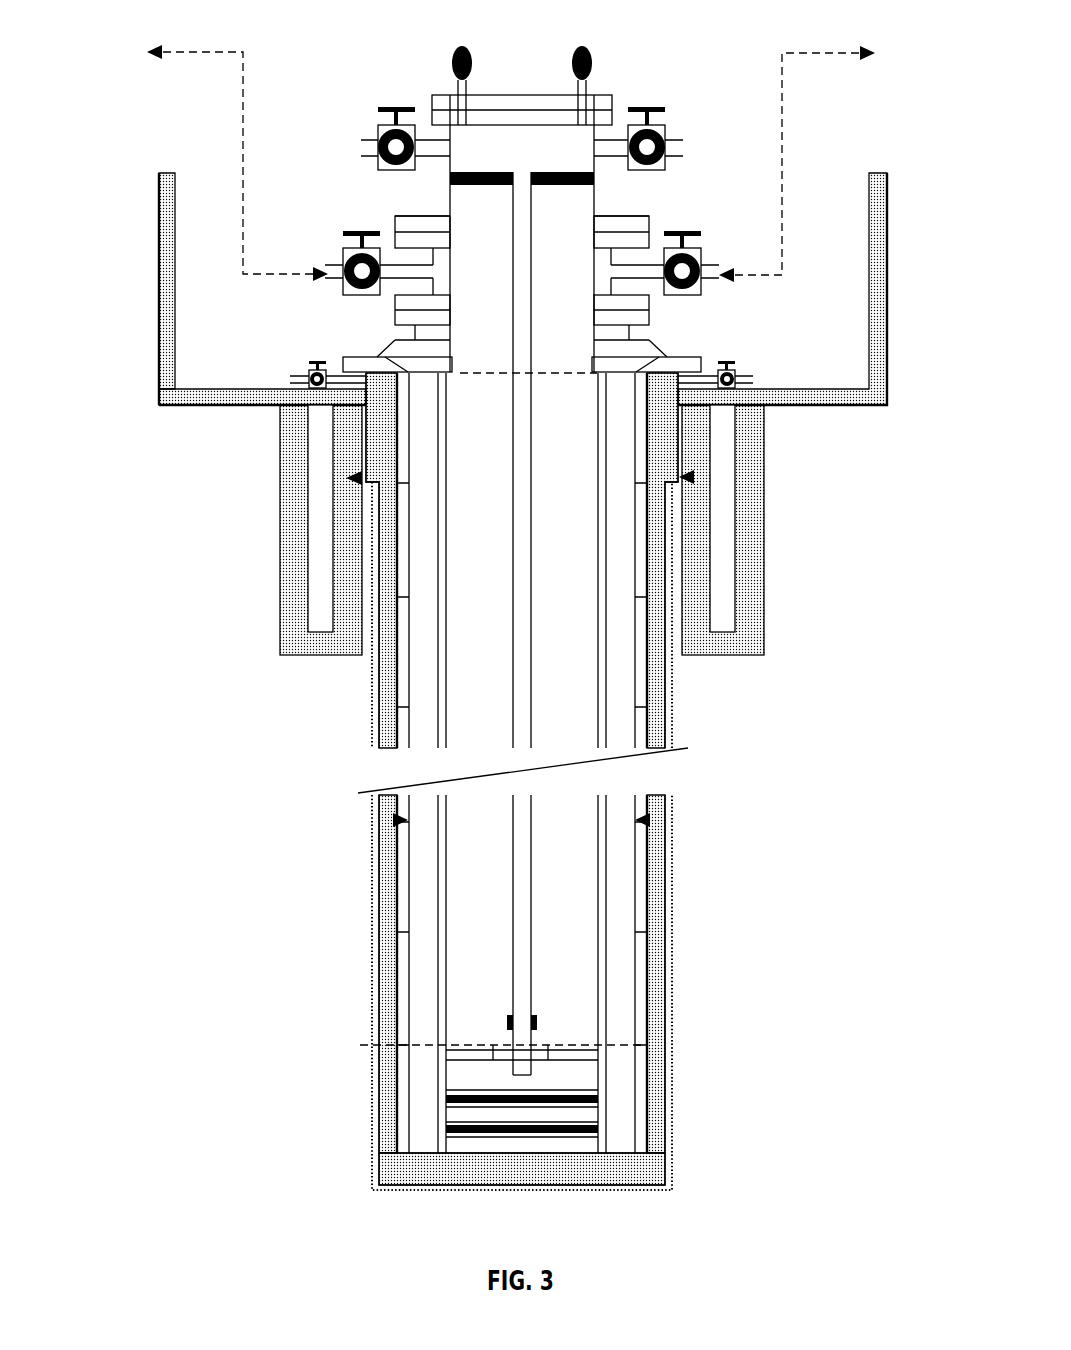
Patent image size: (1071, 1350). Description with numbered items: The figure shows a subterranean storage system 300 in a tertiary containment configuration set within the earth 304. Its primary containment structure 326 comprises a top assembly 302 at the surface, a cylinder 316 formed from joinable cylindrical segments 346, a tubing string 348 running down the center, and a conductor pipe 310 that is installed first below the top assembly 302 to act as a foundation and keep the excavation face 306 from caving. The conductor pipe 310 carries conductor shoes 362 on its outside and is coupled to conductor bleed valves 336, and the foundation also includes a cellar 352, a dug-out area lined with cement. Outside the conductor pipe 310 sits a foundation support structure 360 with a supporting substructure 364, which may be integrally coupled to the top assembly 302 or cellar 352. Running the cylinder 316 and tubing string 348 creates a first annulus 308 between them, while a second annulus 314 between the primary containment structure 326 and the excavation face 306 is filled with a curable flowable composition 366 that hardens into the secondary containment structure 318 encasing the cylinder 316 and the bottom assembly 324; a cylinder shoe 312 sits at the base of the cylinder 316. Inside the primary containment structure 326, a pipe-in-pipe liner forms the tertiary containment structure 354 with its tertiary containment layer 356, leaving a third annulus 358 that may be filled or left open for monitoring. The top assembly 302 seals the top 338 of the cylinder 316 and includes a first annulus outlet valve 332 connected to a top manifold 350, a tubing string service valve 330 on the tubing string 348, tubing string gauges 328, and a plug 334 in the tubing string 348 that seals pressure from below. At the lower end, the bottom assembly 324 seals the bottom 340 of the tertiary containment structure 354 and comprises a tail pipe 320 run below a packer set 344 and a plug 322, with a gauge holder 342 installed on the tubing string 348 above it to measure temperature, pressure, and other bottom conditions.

The subterranean storage system 300 is at (893, 68).
The top assembly 302 is at (778, 380).
The earth 304 is at (900, 452).
The excavation face 306 is at (670, 717).
The first annulus 308 is at (494, 433).
The conductor pipe 310 is at (320, 448).
The cylinder shoe 312 is at (389, 1157).
The second annulus 314 is at (380, 713).
The cylinder 316 is at (395, 645).
The secondary containment structure 318 is at (364, 492).
The tail pipe 320 is at (551, 1068).
The plug 322 is at (598, 1128).
The bottom assembly 324 is at (357, 1045).
The primary containment structure 326 is at (383, 600).
The tubing string gauges 328 is at (452, 58).
The tubing string service valve 330 is at (378, 130).
The first annulus outlet valve 332 is at (343, 250).
The plug 334 is at (492, 187).
The conductor bleed valve 336 is at (311, 362).
The top 338 is at (458, 372).
The bottom 340 is at (360, 1045).
The gauge holder 342 is at (537, 1022).
The packer set 344 is at (618, 1043).
The joinable cylindrical segments 346 is at (403, 513).
The tubing string 348 is at (513, 642).
The top manifold 350 is at (260, 158).
The cellar 352 is at (125, 407).
The tertiary containment structure 354 is at (394, 820).
The tertiary containment layer 356 is at (447, 513).
The third annulus 358 is at (427, 873).
The foundation support structure 360 is at (362, 478).
The conductor shoes 362 is at (693, 477).
The supporting substructure 364 is at (293, 587).
The flowable composition 366 is at (528, 1180).